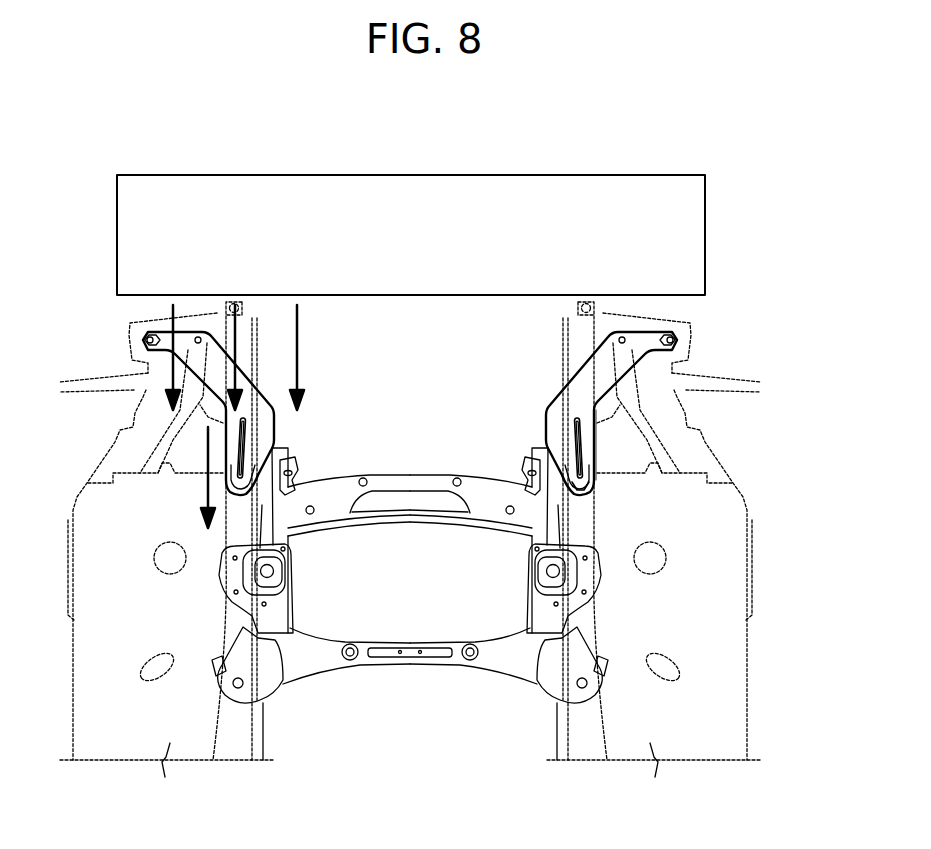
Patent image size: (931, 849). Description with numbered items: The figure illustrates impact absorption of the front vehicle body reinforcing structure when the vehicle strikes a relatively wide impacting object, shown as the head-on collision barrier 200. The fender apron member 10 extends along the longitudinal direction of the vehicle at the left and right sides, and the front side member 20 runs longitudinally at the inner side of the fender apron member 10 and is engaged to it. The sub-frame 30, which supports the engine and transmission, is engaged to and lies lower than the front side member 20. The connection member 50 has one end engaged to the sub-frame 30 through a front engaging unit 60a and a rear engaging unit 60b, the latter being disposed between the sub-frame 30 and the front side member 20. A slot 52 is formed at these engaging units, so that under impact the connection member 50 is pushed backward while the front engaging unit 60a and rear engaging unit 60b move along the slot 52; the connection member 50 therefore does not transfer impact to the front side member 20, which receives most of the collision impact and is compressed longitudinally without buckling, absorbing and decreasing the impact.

The head-on collision barrier 200 is at (705, 237).
The fender apron member 10 is at (74, 572).
The front side member 20 is at (232, 747).
The sub-frame 30 is at (403, 481).
The connection member 50 is at (275, 405).
The slot 52 is at (583, 447).
The front engaging unit 60a is at (577, 420).
The rear engaging unit 60b is at (583, 465).